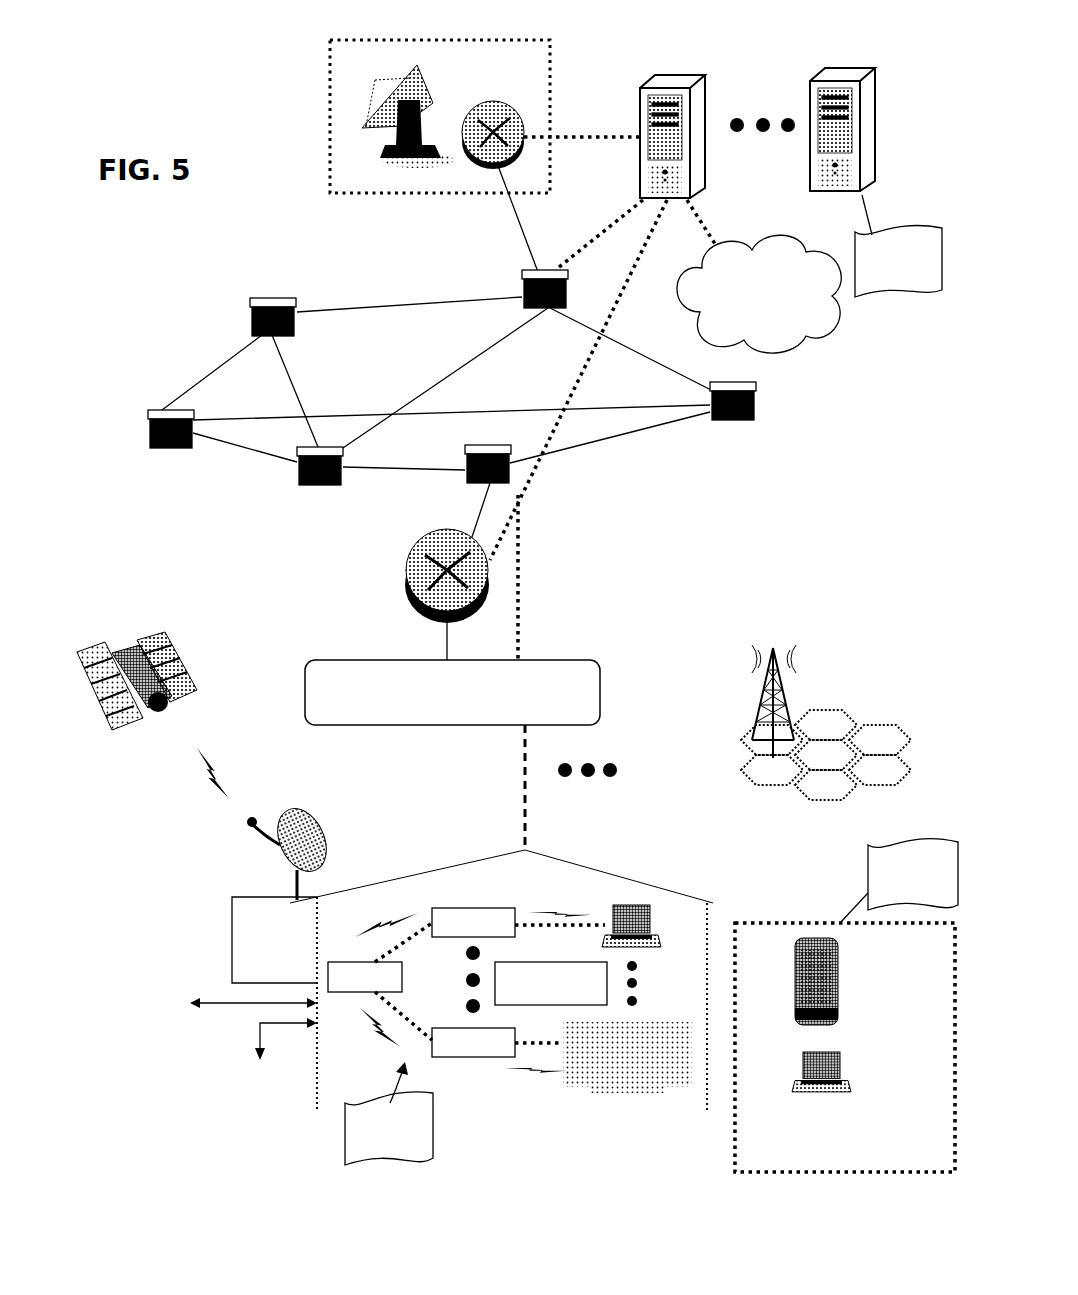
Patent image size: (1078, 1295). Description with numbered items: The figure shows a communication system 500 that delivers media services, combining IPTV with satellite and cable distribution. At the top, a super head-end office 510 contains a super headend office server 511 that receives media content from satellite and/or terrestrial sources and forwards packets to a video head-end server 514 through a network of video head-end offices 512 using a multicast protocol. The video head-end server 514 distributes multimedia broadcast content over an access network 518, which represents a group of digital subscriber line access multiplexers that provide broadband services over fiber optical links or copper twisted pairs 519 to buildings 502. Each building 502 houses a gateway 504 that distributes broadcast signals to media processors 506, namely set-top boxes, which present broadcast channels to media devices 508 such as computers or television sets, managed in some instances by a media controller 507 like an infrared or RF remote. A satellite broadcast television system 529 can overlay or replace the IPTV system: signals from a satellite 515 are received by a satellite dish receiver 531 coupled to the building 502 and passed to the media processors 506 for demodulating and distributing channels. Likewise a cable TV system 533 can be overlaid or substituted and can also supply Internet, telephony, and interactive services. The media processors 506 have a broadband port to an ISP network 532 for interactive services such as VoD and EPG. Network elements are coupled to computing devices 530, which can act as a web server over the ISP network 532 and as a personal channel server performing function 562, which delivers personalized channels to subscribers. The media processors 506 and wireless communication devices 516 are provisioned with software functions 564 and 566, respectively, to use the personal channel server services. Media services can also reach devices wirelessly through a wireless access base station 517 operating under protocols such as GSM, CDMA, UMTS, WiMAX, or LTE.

The communication system 500 is at (163, 137).
The super head-end office 510 is at (330, 128).
The super headend office server 511 is at (468, 118).
The computing devices 530 is at (848, 63).
The function 562 is at (911, 272).
The ISP network 532 is at (740, 334).
The network of video head-end offices 512 is at (148, 430).
The video head-end server 514 is at (405, 580).
The access network 518 is at (600, 690).
The fiber optical links or copper twisted pairs 519 is at (522, 815).
The satellite 515 is at (95, 690).
The satellite broadcast television system 529 is at (226, 732).
The satellite dish receiver 531 is at (215, 897).
The cable TV system 533 is at (240, 1128).
The buildings 502 is at (526, 1131).
The gateway 504 is at (393, 989).
The media processors 506 is at (510, 934).
The media controller 507 is at (590, 995).
The media devices 508 is at (640, 905).
The software functions 564 is at (401, 1144).
The wireless access base station 517 is at (823, 712).
The software functions 566 is at (925, 889).
The wireless communication devices 516 is at (848, 955).